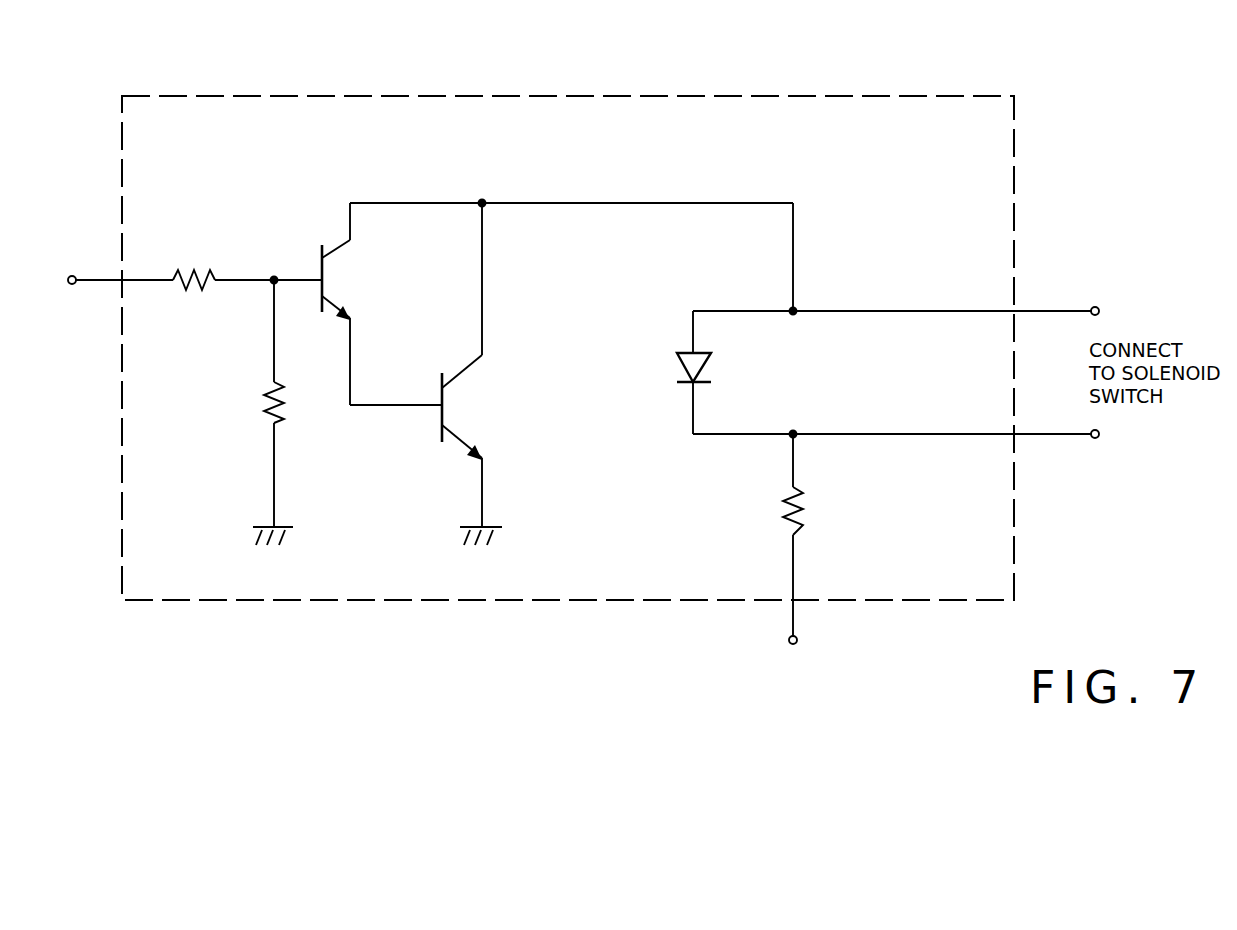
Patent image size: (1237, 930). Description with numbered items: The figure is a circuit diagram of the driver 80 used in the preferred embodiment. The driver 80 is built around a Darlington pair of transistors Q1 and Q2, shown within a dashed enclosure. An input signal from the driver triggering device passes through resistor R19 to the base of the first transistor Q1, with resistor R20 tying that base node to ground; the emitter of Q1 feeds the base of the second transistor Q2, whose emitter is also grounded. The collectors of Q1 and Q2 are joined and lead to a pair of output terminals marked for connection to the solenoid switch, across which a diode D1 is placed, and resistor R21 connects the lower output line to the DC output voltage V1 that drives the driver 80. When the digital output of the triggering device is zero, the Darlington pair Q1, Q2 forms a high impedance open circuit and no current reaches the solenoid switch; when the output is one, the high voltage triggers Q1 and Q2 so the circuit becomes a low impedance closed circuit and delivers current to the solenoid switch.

The driver 80 is at (913, 96).
The input resistor R19 is at (198, 263).
The bias resistor R20 is at (247, 412).
The current limiting resistor R21 is at (826, 535).
The Darlington pair transistor Q1 is at (355, 304).
The Darlington pair transistor Q2 is at (472, 374).
The diode D1 is at (671, 372).
The DC output voltage V1 is at (800, 665).